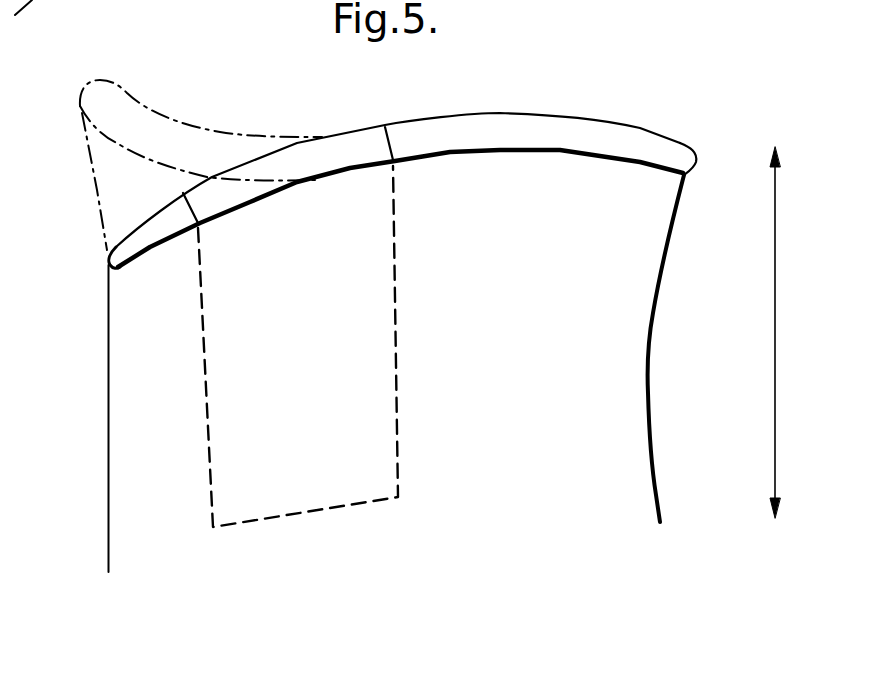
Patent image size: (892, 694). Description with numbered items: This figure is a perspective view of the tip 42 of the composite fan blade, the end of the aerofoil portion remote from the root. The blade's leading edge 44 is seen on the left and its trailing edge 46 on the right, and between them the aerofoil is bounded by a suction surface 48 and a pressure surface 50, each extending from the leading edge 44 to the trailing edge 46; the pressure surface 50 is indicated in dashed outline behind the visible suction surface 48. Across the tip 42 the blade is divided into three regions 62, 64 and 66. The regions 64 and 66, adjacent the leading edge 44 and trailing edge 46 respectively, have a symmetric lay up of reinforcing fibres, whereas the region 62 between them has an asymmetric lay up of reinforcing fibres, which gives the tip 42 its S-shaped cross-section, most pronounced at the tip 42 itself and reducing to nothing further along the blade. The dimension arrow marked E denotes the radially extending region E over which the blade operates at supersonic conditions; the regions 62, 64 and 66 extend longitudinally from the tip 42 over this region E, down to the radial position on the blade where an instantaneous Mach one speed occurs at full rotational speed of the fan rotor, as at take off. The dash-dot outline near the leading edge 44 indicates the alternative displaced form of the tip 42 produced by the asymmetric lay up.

The tip 42 is at (492, 113).
The leading edge 44 is at (108, 329).
The trailing edge 46 is at (654, 313).
The suction surface 48 is at (421, 116).
The pressure surface 50 is at (441, 200).
The region 62 is at (327, 154).
The region 64 is at (125, 253).
The region 66 is at (600, 131).
The radially extending region E is at (785, 332).